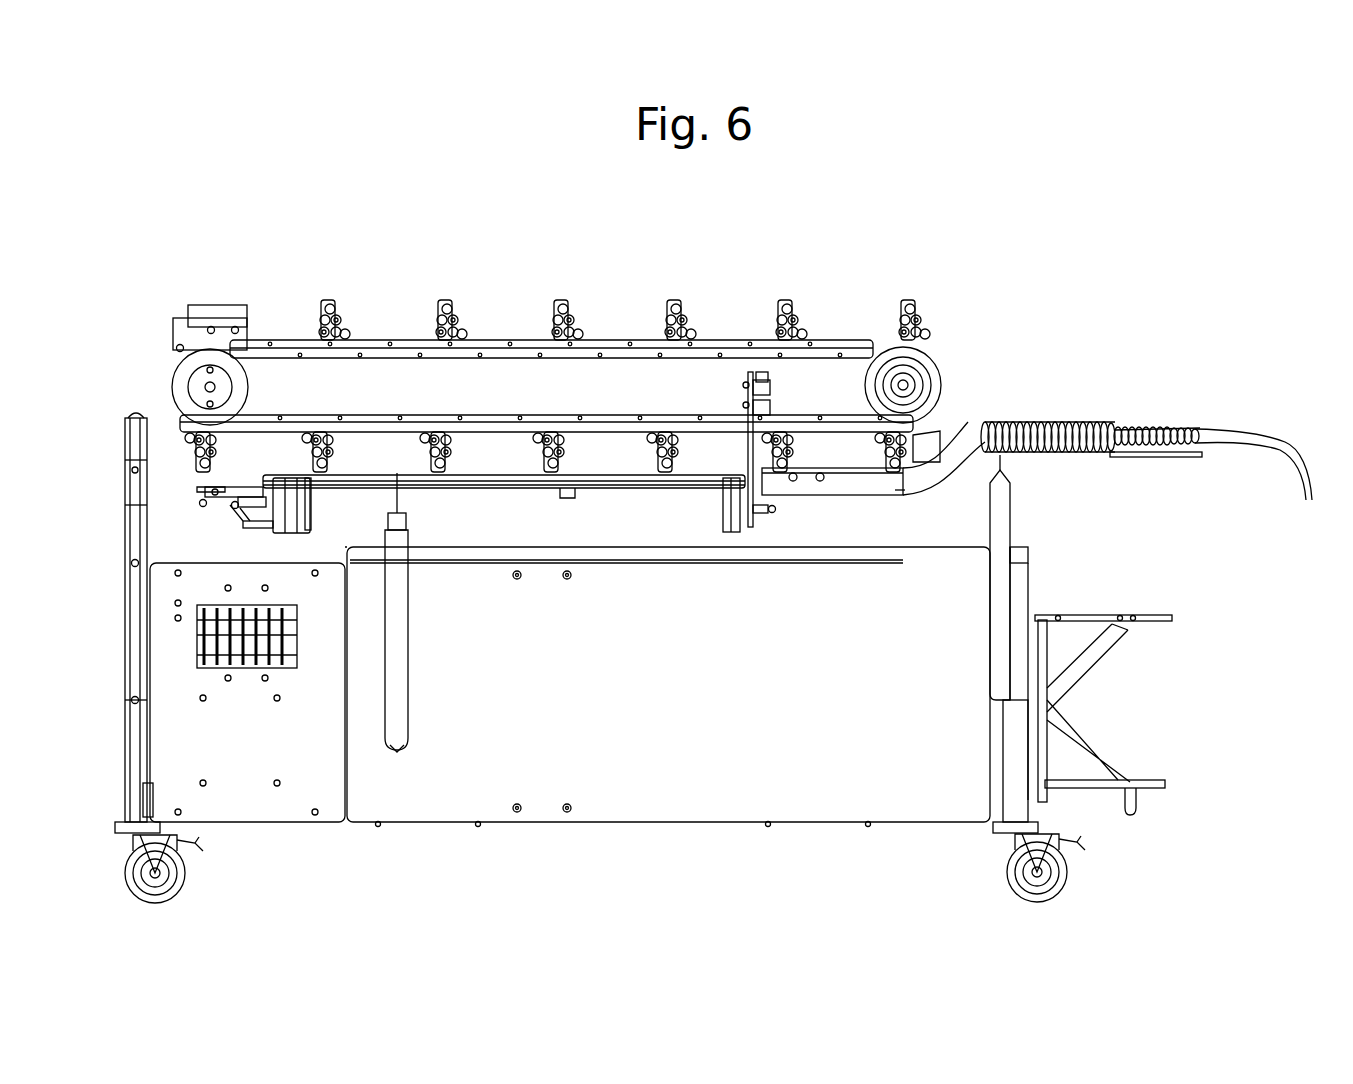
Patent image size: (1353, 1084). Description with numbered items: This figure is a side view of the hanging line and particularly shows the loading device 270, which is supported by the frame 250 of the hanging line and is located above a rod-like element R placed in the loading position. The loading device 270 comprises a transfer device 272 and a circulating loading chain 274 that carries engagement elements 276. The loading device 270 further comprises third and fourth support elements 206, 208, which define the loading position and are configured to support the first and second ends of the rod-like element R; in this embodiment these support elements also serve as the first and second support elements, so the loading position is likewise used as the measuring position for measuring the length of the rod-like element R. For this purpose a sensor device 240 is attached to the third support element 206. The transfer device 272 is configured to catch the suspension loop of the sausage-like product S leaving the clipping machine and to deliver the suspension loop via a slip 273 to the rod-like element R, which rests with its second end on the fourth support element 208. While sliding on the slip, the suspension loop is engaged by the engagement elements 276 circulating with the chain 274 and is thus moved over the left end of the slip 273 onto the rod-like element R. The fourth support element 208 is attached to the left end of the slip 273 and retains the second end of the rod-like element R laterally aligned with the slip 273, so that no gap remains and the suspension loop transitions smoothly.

The loading device 270 is at (975, 272).
The circulating loading chain 274 is at (603, 347).
The engagement elements 276 is at (797, 303).
The transfer device 272 is at (1095, 420).
The slip 273 is at (857, 488).
The frame 250 is at (125, 418).
The sensor device 240 is at (248, 470).
The third support element 206 is at (310, 490).
The fourth support element 208 is at (728, 483).
The rod-like element R is at (518, 485).
The sausage-like product S is at (398, 693).